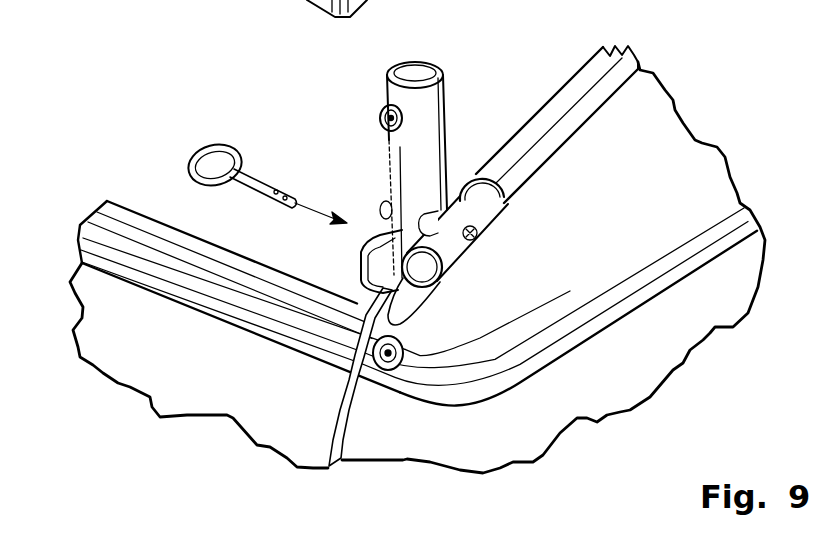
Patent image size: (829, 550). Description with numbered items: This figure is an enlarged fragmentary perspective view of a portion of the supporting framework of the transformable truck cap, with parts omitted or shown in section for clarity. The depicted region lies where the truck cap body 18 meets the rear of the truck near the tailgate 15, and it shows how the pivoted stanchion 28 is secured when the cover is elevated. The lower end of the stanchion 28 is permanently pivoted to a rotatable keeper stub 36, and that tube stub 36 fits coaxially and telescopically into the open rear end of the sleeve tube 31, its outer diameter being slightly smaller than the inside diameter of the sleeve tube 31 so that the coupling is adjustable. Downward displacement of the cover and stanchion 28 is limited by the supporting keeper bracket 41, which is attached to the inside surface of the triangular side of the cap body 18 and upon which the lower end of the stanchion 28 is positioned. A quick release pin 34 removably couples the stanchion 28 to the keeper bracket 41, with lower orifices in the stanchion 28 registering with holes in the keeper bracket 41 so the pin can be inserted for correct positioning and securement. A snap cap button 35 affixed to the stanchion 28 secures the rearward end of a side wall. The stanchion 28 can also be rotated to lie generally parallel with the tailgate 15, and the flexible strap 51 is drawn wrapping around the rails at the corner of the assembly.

The tailgate 15 is at (123, 338).
The truck cap body 18 is at (658, 122).
The stanchion 28 is at (440, 108).
The sleeve tube 31 is at (607, 70).
The quick release pin 34 is at (265, 198).
The snap cap button 35 is at (378, 118).
The keeper stub 36 is at (447, 250).
The keeper bracket 41 is at (352, 278).
The strap 51 is at (407, 307).